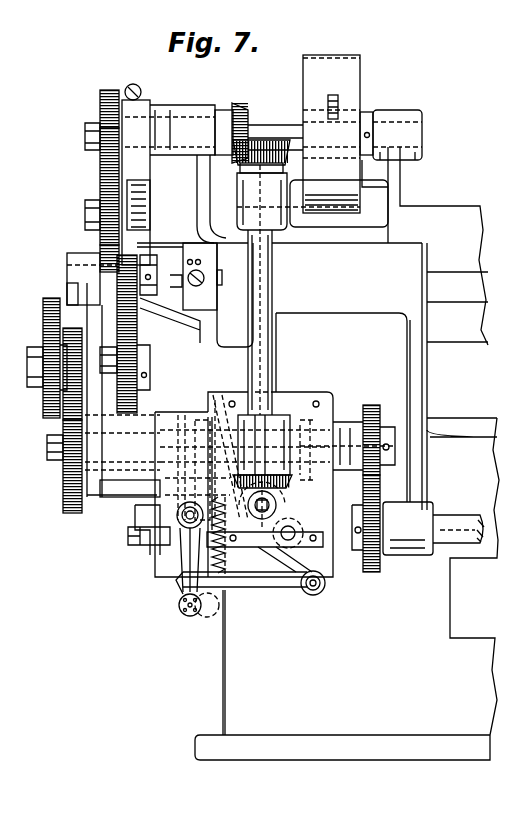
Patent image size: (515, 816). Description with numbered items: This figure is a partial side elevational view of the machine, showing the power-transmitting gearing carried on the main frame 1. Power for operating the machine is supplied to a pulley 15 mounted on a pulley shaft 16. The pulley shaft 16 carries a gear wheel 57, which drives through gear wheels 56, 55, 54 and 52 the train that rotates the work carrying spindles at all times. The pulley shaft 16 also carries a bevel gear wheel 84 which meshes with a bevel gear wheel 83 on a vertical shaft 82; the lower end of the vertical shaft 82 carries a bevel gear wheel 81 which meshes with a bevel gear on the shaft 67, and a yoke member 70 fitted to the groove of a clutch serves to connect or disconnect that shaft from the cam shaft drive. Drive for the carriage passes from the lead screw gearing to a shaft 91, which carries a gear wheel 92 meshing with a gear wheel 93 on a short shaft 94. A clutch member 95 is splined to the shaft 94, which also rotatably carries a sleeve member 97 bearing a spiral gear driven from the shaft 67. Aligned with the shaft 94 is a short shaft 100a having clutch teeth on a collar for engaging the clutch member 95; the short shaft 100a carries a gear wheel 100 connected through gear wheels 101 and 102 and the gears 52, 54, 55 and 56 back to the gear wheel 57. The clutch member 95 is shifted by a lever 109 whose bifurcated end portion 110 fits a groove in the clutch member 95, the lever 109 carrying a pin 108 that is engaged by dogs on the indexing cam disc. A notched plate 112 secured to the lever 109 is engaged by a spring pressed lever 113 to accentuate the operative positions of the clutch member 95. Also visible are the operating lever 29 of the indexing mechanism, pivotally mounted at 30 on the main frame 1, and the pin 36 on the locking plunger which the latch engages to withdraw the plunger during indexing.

The main frame 1 is at (452, 615).
The pulley 15 is at (337, 55).
The pulley shaft 16 is at (422, 128).
The operating lever 29 is at (150, 555).
The pivot 30 is at (128, 543).
The pin 36 is at (183, 290).
The gear wheel 52 is at (158, 262).
The gear wheel 54 is at (150, 186).
The gear wheel 55 is at (103, 250).
The gear wheel 56 is at (100, 176).
The gear wheel 57 is at (107, 90).
The shaft 67 is at (277, 506).
The yoke member 70 is at (266, 548).
The bevel gear wheel 81 is at (292, 483).
The vertical shaft 82 is at (272, 265).
The bevel gear wheel 83 is at (257, 150).
The bevel gear wheel 84 is at (240, 103).
The shaft 91 is at (460, 515).
The gear wheel 92 is at (372, 572).
The gear wheel 93 is at (372, 405).
The short shaft 94 is at (395, 445).
The clutch member 95 is at (178, 415).
The sleeve member 97 is at (213, 395).
The gear wheel 100 is at (68, 512).
The short shaft 100a is at (47, 447).
The gear wheel 101 is at (82, 318).
The gear wheel 102 is at (50, 298).
The pin 108 is at (212, 617).
The lever 109 is at (180, 565).
The bifurcated end portion 110 is at (200, 420).
The notched plate 112 is at (182, 612).
The spring pressed lever 113 is at (262, 587).